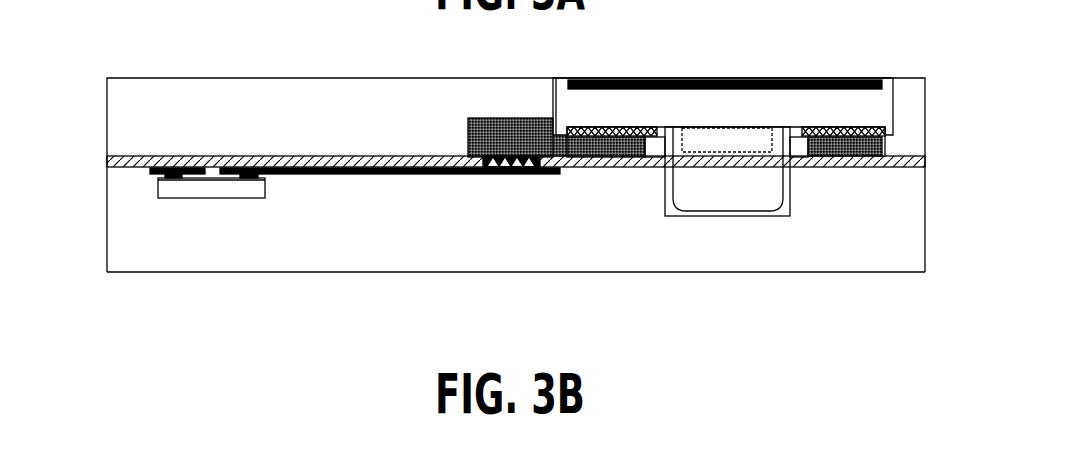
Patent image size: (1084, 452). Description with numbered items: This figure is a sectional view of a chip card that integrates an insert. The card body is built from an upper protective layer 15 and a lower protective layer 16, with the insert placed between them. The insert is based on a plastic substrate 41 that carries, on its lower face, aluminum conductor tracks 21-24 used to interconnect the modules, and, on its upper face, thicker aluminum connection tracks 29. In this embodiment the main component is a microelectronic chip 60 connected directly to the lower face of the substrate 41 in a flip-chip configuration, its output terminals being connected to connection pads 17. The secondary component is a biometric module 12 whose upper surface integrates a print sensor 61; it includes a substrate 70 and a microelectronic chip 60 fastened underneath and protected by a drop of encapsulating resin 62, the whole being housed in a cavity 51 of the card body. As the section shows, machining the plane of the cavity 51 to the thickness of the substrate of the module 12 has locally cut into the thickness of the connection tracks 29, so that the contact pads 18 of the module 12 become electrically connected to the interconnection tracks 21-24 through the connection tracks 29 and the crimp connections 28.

The biometric module 12 is at (823, 63).
The upper protective layer 15 is at (147, 114).
The lower protective layer 16 is at (133, 248).
The connection pads 17 is at (173, 175).
The contact pads 18 is at (611, 132).
The conductor tracks 21-24 is at (386, 175).
The crimp connections 28 is at (489, 168).
The connection tracks 29 is at (513, 132).
The plastic substrate 41 is at (112, 160).
The cavity 51 is at (785, 208).
The microelectronic chip 60 is at (222, 187).
The print sensor 61 is at (762, 80).
The encapsulating resin 62 is at (737, 190).
The substrate 70 is at (647, 110).